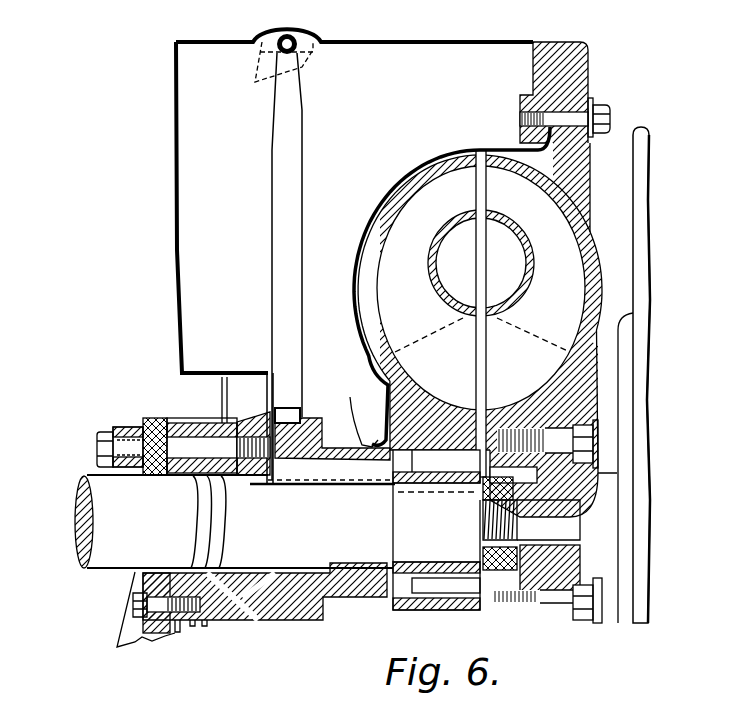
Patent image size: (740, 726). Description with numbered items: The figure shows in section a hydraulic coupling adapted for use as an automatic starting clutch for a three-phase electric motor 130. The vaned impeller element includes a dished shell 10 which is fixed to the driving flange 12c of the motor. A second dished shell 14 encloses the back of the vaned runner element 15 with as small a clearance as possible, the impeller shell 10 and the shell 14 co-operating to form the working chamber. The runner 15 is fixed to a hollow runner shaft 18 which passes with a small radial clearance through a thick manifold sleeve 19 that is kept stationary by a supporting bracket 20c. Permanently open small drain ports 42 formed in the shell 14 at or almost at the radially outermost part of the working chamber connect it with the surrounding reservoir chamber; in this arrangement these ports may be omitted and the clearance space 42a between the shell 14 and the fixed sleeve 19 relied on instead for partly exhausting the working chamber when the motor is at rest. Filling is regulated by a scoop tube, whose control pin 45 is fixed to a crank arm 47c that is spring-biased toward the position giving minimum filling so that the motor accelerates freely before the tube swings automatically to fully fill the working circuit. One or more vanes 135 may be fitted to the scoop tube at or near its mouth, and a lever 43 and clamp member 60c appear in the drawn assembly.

The dished shell 10 is at (587, 263).
The dished shell 14 is at (398, 177).
The vaned runner element 15 is at (380, 333).
The hollow runner shaft 18 is at (327, 521).
The manifold sleeve 19 is at (303, 610).
The drain ports 42 is at (480, 150).
The clearance space 42a is at (350, 413).
The lever arm 43 is at (275, 173).
The scoop tube control pin 45 is at (218, 443).
The crank arm 47c is at (122, 422).
The bracket 20c is at (158, 418).
The clamp member 60c is at (322, 446).
The driving flange 12c is at (567, 425).
The three-phase electric motor 130 is at (642, 583).
The vanes 135 is at (270, 72).